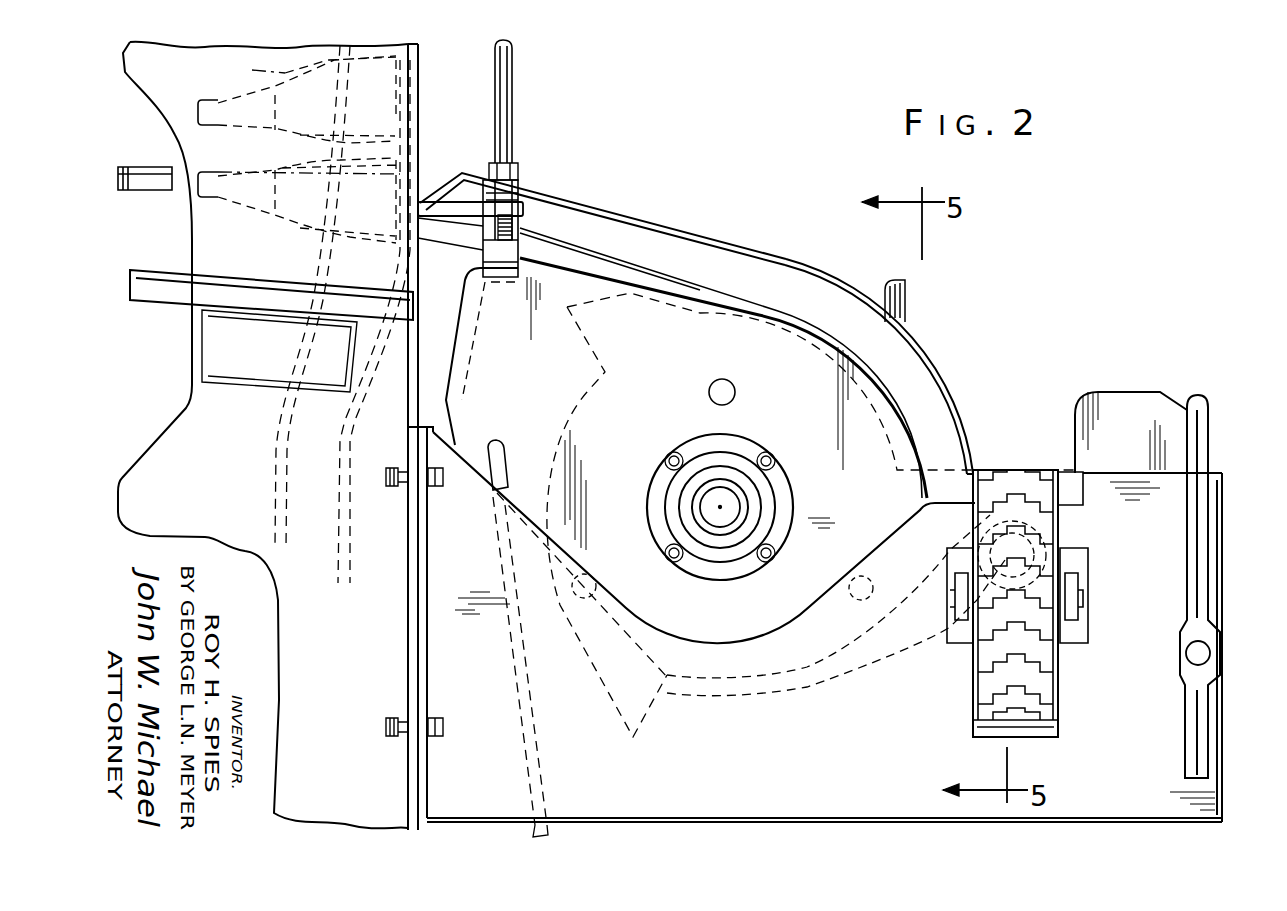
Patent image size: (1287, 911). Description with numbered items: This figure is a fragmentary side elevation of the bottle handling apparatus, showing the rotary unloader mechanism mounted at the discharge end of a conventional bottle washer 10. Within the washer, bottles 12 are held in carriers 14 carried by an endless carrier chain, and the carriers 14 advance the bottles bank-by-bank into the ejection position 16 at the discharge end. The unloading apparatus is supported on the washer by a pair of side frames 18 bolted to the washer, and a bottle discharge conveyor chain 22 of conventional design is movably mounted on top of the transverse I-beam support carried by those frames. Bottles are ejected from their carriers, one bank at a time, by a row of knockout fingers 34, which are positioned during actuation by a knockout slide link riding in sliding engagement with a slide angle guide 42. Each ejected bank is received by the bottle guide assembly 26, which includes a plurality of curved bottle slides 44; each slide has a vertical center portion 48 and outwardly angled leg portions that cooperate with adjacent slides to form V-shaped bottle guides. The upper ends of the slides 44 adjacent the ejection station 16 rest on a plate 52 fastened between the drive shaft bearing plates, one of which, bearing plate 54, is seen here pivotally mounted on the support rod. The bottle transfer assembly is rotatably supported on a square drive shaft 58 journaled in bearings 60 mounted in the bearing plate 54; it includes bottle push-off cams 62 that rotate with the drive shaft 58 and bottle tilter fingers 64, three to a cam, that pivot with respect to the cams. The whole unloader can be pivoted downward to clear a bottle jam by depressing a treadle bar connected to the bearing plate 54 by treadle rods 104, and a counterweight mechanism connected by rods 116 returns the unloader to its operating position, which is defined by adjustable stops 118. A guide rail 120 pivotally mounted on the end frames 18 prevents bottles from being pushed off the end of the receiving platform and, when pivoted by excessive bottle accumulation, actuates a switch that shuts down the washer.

The bottle washer 10 is at (184, 400).
The bottles 12 is at (247, 145).
The carriers 14 is at (262, 248).
The ejection position 16 is at (444, 165).
The side frames 18 is at (835, 766).
The bottle discharge conveyor chain 22 is at (1018, 468).
The bottle guide assembly 26 is at (661, 219).
The knockout fingers 34 is at (140, 170).
The slide angle guide 42 is at (152, 300).
The curved bottle slides 44 is at (735, 273).
The vertical center portion 48 is at (935, 358).
The plate 52 is at (470, 298).
The drive shaft bearing plate 54 is at (652, 420).
The square drive shaft 58 is at (717, 515).
The bearings 60 is at (760, 512).
The bottle push-off cams 62 is at (712, 688).
The bottle tilter fingers 64 is at (911, 319).
The treadle rods 104 is at (496, 442).
The rods 116 is at (505, 92).
The adjustable stops 118 is at (508, 230).
The guide rail 120 is at (1200, 398).